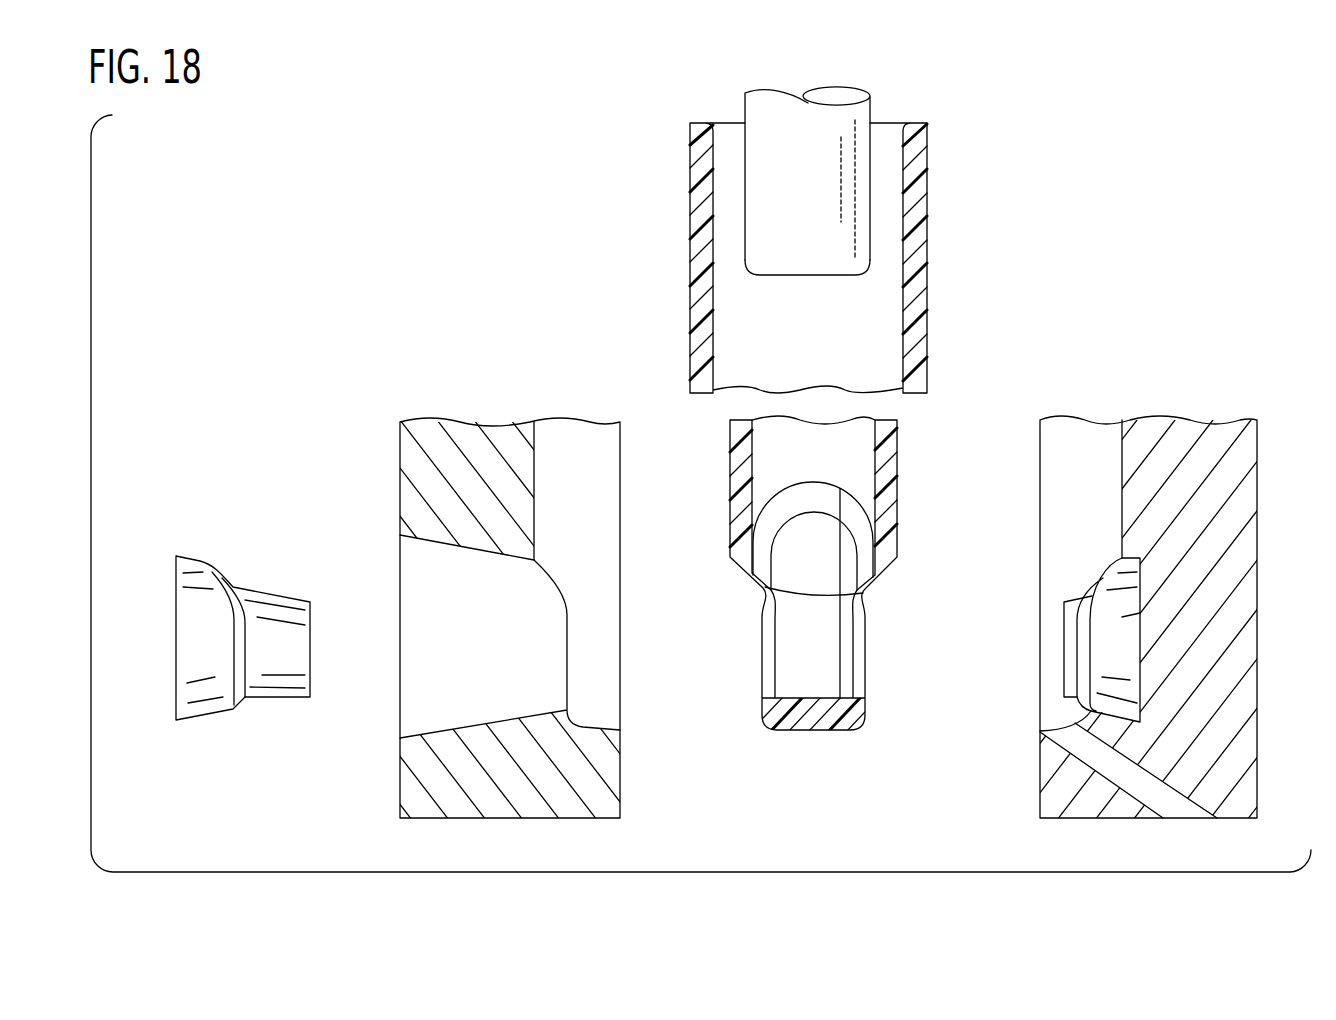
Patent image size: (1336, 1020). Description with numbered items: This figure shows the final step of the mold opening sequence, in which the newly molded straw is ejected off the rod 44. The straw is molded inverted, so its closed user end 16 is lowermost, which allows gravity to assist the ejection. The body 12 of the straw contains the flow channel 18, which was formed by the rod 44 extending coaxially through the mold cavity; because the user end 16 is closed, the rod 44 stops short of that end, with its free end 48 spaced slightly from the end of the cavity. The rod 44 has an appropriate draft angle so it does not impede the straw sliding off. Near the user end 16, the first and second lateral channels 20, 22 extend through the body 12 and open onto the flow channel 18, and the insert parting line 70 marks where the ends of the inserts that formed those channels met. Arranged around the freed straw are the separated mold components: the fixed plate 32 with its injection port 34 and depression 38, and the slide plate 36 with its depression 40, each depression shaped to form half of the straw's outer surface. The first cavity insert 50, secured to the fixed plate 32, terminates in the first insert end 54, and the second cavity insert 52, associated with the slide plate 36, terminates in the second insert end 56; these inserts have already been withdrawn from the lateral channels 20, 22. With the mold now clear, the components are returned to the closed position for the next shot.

The body 12 is at (690, 270).
The user end 16 is at (833, 712).
The flow channel 18 is at (870, 323).
The first lateral channel 20 is at (858, 676).
The second lateral channel 22 is at (798, 654).
The fixed plate 32 is at (1225, 462).
The injection port 34 is at (1134, 780).
The slide plate 36 is at (446, 768).
The depression 38 is at (1122, 497).
The depression 40 is at (534, 490).
The rod 44 is at (823, 207).
The free end 48 is at (807, 279).
The first cavity insert 50 is at (1138, 612).
The second cavity insert 52 is at (195, 662).
The first insert end 54 is at (1062, 650).
The second insert end 56 is at (312, 648).
The insert parting line 70 is at (842, 640).